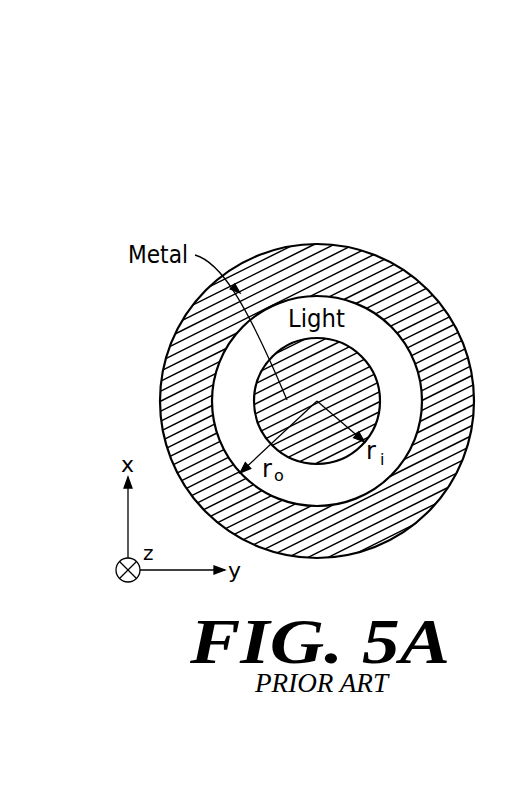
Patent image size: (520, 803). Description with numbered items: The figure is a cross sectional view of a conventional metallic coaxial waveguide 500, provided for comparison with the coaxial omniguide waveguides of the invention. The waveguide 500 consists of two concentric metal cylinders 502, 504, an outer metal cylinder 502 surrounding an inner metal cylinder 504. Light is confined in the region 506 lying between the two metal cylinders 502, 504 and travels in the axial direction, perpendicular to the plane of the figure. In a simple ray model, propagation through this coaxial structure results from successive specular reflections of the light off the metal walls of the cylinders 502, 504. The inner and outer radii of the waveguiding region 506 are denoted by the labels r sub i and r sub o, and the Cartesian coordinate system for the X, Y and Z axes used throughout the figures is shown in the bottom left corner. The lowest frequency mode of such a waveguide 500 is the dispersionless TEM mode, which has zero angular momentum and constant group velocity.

The metallic coaxial waveguide 500 is at (337, 387).
The metal cylinder 502 is at (442, 358).
The metal cylinder 504 is at (373, 420).
The region 506 is at (350, 485).